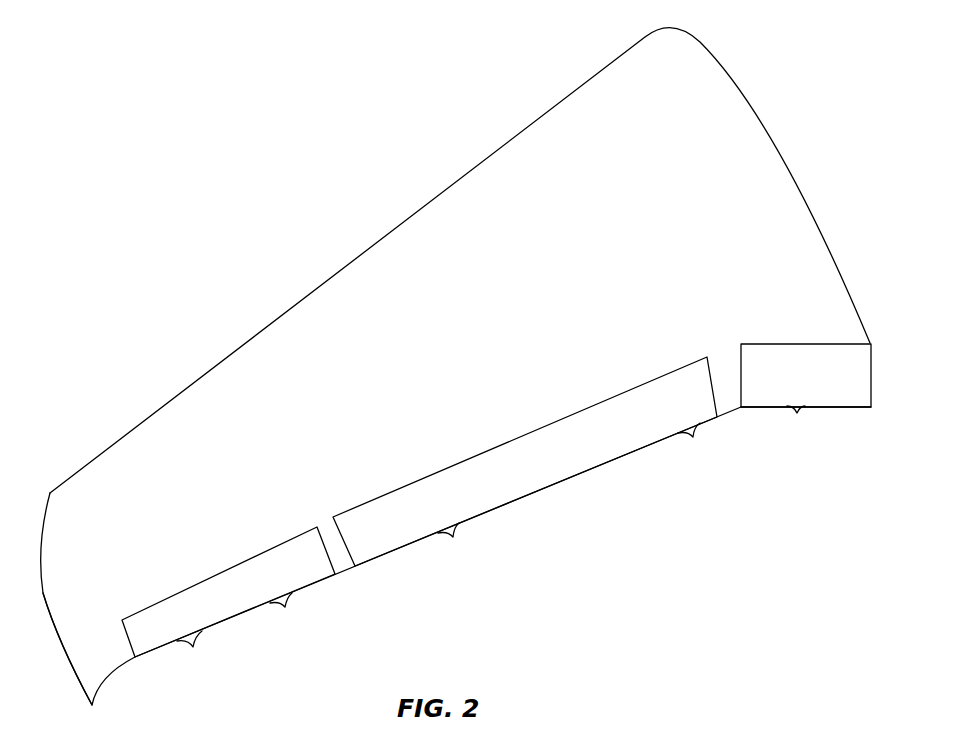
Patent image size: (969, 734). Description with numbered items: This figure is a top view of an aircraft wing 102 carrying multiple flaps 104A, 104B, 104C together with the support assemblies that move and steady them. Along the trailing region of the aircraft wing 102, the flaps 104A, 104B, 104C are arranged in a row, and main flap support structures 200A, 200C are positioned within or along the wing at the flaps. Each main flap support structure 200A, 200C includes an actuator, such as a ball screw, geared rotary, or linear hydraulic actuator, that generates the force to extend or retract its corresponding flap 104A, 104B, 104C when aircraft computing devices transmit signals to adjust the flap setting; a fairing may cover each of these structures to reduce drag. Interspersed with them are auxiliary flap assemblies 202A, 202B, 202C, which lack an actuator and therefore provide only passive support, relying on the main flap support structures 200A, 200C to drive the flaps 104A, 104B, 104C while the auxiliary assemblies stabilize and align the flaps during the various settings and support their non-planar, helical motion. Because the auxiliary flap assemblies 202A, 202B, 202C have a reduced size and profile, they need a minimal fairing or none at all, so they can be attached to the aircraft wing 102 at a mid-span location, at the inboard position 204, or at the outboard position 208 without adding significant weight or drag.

The aircraft wing 102 is at (460, 228).
The flap 104A is at (300, 567).
The flap 104B is at (510, 478).
The flap 104C is at (813, 390).
The main flap support structure 200A is at (285, 607).
The main flap support structure 200C is at (797, 413).
The auxiliary flap assembly 202A is at (193, 647).
The auxiliary flap assembly 202B is at (453, 537).
The auxiliary flap assembly 202C is at (693, 437).
The inboard position 204 is at (853, 376).
The outboard position 208 is at (83, 652).